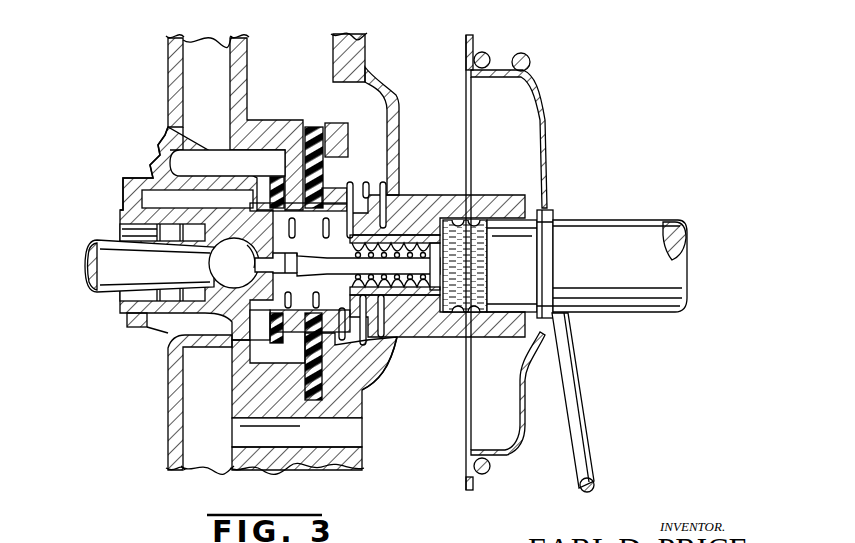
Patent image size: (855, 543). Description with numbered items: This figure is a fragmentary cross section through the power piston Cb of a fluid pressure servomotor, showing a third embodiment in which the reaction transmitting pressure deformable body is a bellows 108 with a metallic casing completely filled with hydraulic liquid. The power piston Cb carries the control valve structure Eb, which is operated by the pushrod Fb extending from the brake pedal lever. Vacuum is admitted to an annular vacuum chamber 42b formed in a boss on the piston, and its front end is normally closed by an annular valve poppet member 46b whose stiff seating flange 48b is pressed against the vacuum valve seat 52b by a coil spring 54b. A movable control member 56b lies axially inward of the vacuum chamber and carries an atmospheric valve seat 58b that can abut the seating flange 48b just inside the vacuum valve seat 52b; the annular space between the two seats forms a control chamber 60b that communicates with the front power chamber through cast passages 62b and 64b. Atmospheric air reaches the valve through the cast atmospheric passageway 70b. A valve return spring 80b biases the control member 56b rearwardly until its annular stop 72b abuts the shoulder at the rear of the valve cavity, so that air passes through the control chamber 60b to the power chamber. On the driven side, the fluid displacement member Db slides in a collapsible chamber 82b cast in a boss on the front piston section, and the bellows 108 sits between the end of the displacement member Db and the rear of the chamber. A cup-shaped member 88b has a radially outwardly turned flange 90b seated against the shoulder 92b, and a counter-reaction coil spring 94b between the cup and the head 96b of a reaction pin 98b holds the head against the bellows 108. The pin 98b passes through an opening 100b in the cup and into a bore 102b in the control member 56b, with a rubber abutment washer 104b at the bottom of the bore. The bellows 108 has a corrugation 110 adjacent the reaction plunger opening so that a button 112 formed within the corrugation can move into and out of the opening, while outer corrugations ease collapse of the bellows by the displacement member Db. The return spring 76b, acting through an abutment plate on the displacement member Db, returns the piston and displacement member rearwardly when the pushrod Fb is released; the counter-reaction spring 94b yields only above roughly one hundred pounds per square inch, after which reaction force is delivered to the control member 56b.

The annular vacuum chamber 42b is at (173, 194).
The annular stop 72b is at (132, 200).
The bore 102b is at (246, 178).
The rubber abutment washer 104b is at (246, 216).
The vacuum valve seat 52b is at (286, 150).
The atmospheric passageway 70b is at (345, 113).
The power piston Cb is at (372, 62).
The coil spring 54b is at (374, 194).
The valve return spring 80b is at (365, 218).
The cup-shaped member 88b is at (408, 233).
The radially outwardly turned flange 90b is at (434, 232).
The head of reaction pin 96b is at (442, 272).
The button 112 is at (557, 232).
The fluid displacement member Db is at (636, 324).
The collapsible chamber 82b is at (548, 195).
The bellows 108 is at (440, 222).
The return spring 76b is at (587, 405).
The shoulder 92b is at (428, 318).
The corrugation 110 is at (450, 334).
The seating flange 48b is at (210, 350).
The counter-reaction coil spring 94b is at (432, 335).
The reaction pin 98b is at (436, 355).
The opening 100b is at (442, 380).
The annular valve poppet member 46b is at (340, 333).
The atmospheric valve seat 58b is at (318, 395).
The passage 62b is at (202, 413).
The passage 64b is at (247, 434).
The control chamber 60b is at (207, 340).
The movable control member 56b is at (143, 325).
The control valve structure Eb is at (176, 334).
The pushrod Fb is at (117, 258).